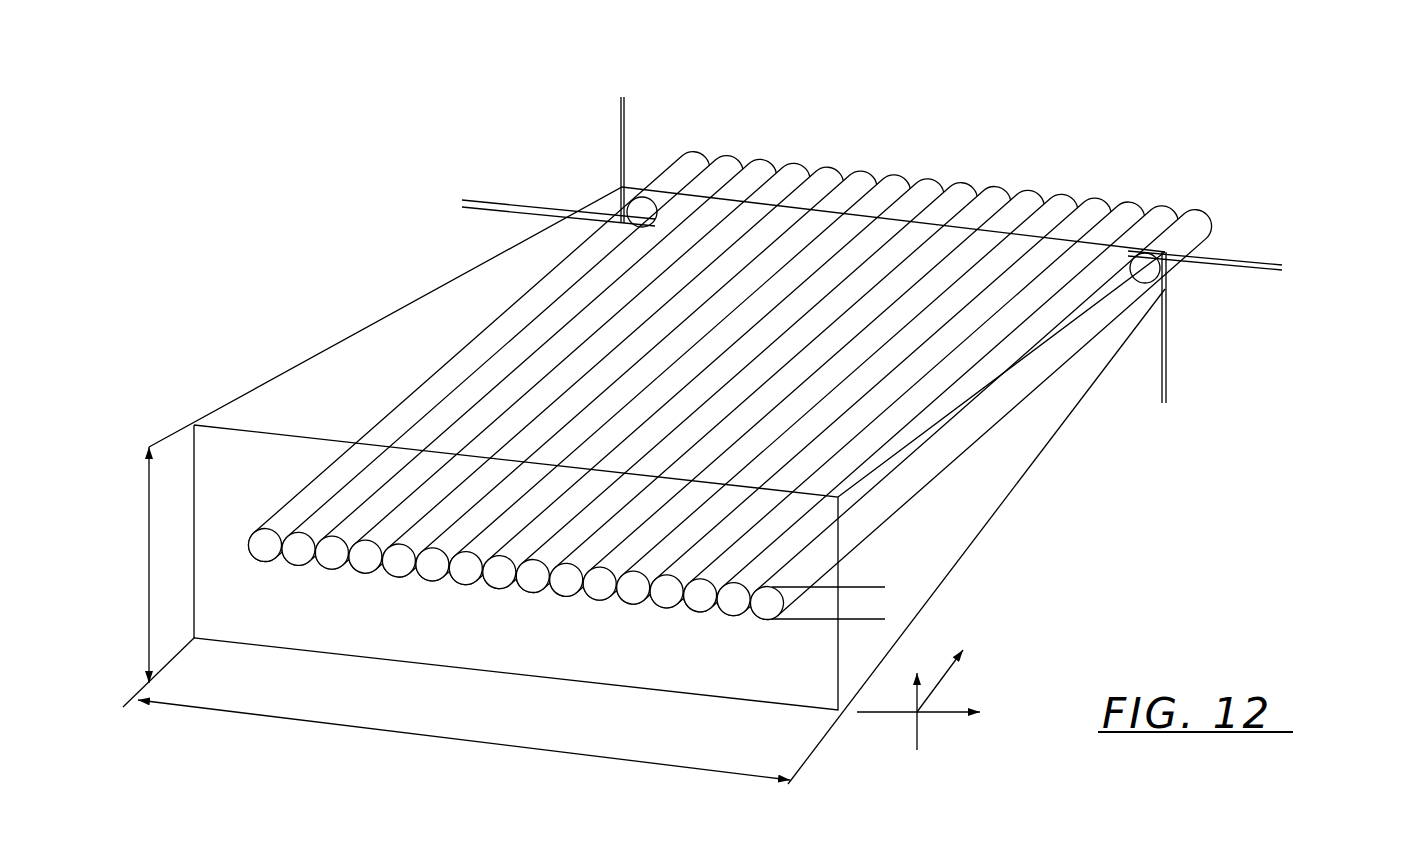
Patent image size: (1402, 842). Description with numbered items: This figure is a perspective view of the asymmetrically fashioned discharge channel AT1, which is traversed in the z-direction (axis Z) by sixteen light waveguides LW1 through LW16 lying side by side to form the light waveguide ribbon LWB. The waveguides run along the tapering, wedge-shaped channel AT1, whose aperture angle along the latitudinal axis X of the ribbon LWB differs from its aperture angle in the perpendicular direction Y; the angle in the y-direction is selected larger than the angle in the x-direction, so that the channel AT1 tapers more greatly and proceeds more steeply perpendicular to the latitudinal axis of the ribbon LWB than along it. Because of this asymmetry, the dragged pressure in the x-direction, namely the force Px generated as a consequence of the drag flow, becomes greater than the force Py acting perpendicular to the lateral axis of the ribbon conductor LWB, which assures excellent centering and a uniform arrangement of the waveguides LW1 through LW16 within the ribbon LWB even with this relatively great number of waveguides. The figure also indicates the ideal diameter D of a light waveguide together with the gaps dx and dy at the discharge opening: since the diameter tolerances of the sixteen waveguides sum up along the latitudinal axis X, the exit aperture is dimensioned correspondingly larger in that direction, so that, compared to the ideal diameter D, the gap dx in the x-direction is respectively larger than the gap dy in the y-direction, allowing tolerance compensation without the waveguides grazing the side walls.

The light waveguide ribbon LWB is at (730, 411).
The light waveguide LW1 is at (263, 545).
The light waveguide LW16 is at (766, 606).
The discharge channel AT1 is at (968, 578).
The ideal diameter D is at (867, 657).
The gap dx is at (662, 120).
The gap dy is at (486, 250).
The force Px is at (430, 190).
The force Py is at (888, 132).
The latitudinal axis X is at (930, 712).
The direction Y is at (916, 699).
The direction Z is at (950, 670).